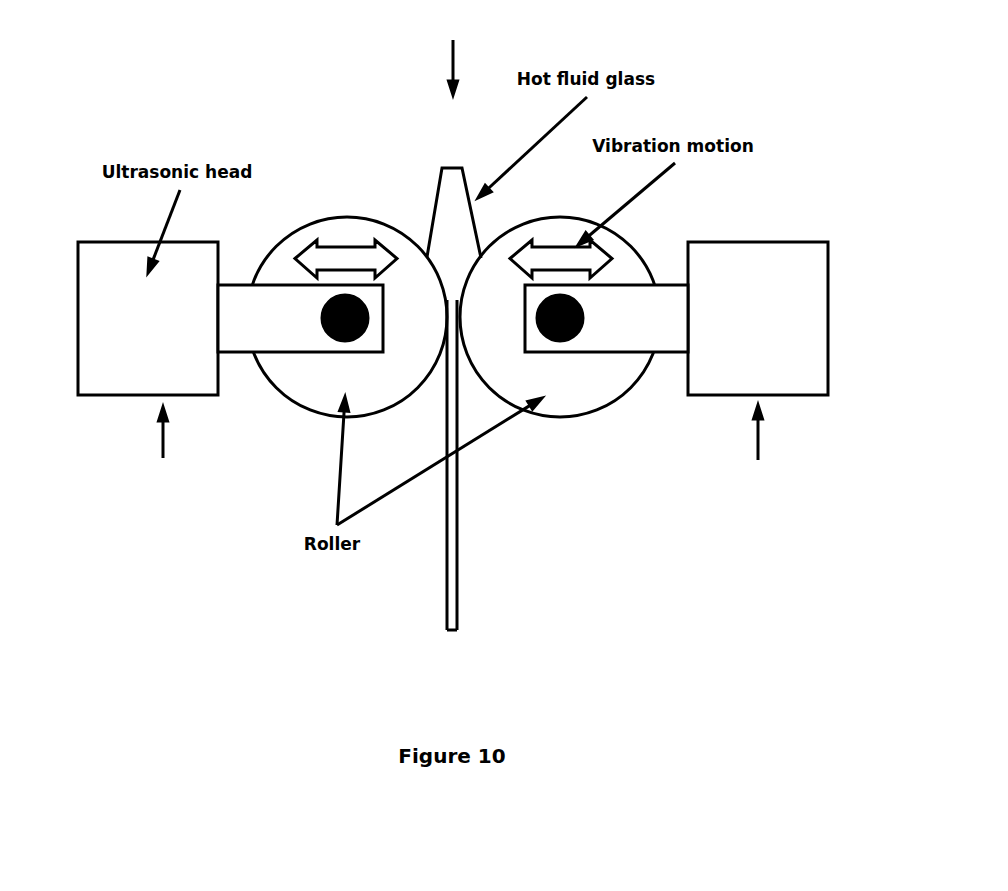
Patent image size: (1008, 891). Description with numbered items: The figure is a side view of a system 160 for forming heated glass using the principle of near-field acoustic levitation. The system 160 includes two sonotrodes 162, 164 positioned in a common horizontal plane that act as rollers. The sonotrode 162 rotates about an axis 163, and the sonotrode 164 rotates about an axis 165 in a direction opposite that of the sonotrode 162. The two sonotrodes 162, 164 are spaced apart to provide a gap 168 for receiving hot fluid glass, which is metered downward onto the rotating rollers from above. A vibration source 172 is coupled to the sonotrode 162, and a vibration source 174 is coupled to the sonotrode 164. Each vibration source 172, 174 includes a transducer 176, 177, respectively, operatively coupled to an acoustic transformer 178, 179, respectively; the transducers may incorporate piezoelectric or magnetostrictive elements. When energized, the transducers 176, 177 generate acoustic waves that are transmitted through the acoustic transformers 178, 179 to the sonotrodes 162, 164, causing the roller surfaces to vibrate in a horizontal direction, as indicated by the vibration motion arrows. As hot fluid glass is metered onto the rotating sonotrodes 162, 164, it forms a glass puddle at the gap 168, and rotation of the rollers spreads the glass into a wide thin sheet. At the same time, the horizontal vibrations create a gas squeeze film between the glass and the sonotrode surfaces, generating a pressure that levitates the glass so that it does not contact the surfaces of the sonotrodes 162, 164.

The system for forming heated glass 160 is at (453, 54).
The sonotrode 162 is at (305, 390).
The axis 163 is at (368, 318).
The sonotrode 164 is at (605, 390).
The axis 165 is at (537, 318).
The gap 168 is at (446, 263).
The vibration source 172 is at (121, 365).
The vibration source 174 is at (784, 365).
The transducer 176 is at (93, 308).
The transducer 177 is at (810, 308).
The acoustic transformer 178 is at (238, 300).
The acoustic transformer 179 is at (672, 300).